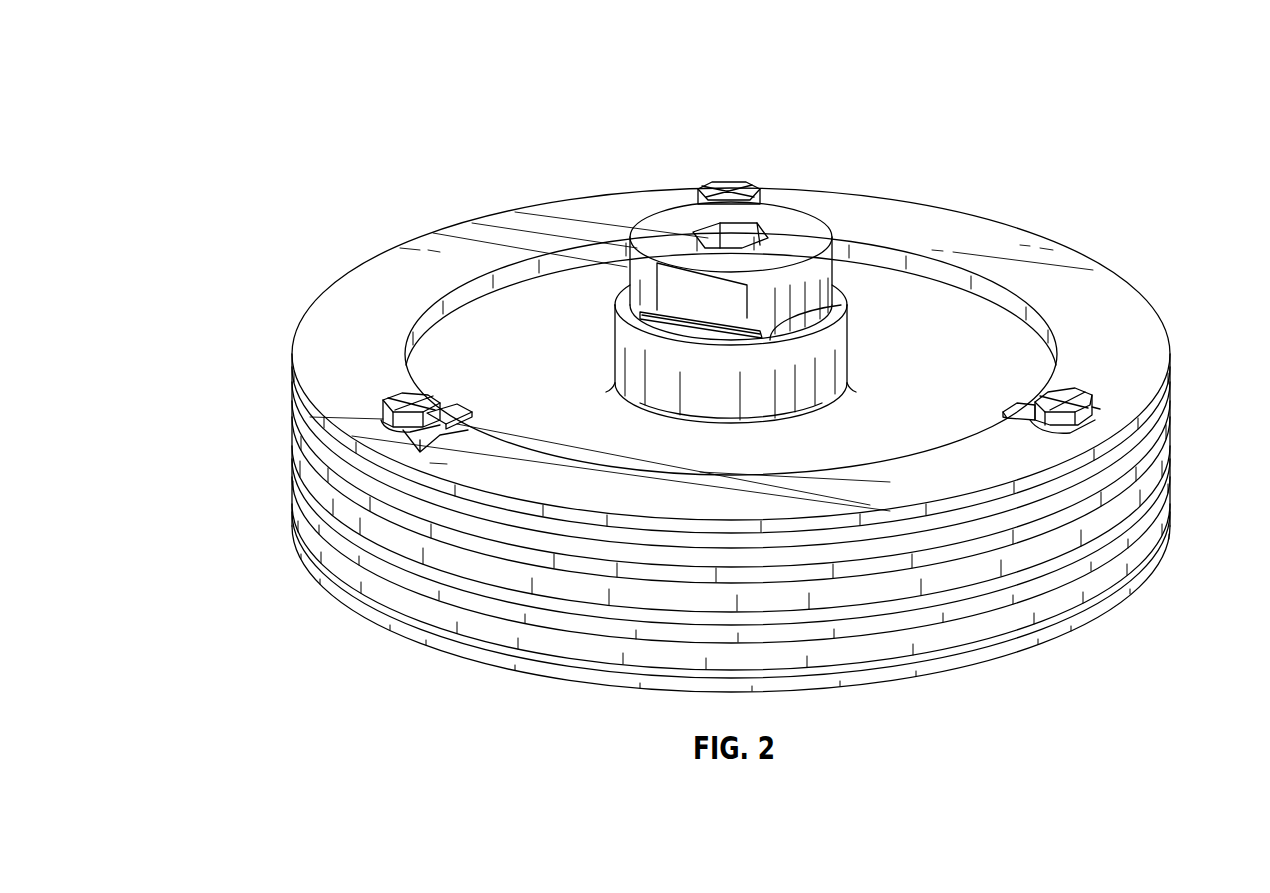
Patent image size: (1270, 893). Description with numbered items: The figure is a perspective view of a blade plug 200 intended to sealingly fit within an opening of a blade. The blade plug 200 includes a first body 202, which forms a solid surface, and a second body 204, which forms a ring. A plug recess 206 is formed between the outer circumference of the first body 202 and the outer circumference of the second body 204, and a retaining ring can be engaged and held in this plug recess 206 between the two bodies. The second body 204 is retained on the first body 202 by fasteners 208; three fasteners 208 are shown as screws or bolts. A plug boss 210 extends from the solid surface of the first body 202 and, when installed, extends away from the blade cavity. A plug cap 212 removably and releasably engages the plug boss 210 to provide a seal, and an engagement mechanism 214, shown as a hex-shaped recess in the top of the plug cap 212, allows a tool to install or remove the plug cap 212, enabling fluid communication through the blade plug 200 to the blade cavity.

The blade plug 200 is at (241, 88).
The first body 202 is at (1150, 547).
The second body 204 is at (1093, 263).
The plug recess 206 is at (262, 381).
The fasteners 208 is at (731, 182).
The plug boss 210 is at (848, 345).
The plug cap 212 is at (661, 236).
The engagement mechanism 214 is at (708, 237).